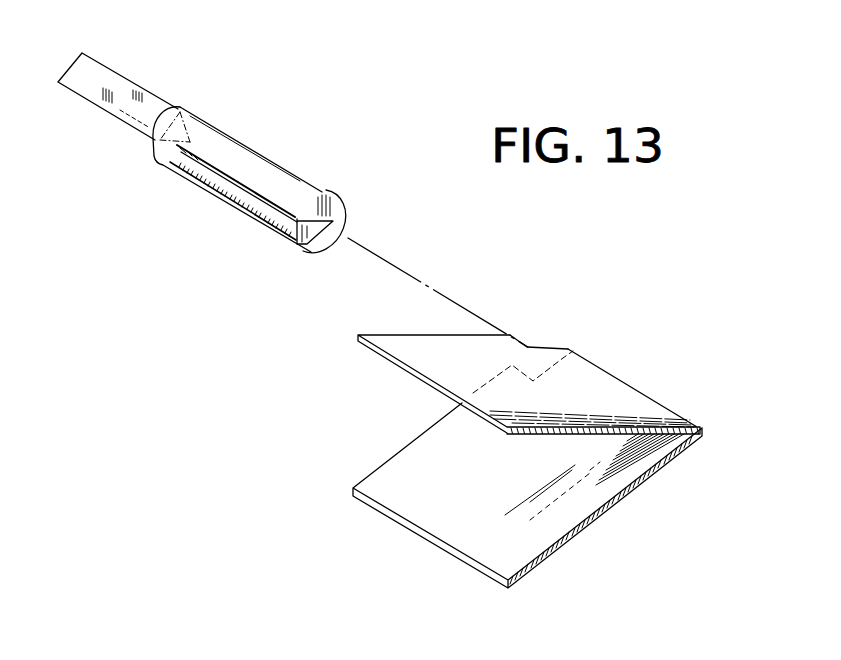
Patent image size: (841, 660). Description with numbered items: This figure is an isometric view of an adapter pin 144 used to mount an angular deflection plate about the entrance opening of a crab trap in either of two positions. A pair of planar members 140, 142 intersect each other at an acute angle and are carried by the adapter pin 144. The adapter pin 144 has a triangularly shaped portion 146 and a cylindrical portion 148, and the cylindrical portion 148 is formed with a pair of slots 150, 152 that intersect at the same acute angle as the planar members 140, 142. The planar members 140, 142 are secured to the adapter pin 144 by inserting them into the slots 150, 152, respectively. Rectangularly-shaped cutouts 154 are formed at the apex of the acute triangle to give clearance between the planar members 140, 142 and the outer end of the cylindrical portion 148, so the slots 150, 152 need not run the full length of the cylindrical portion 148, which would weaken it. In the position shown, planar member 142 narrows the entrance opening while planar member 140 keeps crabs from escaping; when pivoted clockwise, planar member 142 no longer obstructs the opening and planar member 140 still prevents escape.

The planar member 140 is at (638, 402).
The planar member 142 is at (633, 489).
The adapter pin 144 is at (215, 132).
The triangularly shaped portion 146 is at (117, 86).
The cylindrical portion 148 is at (312, 188).
The slot 150 is at (262, 198).
The slot 152 is at (313, 252).
The rectangularly-shaped cutout 154 is at (547, 346).